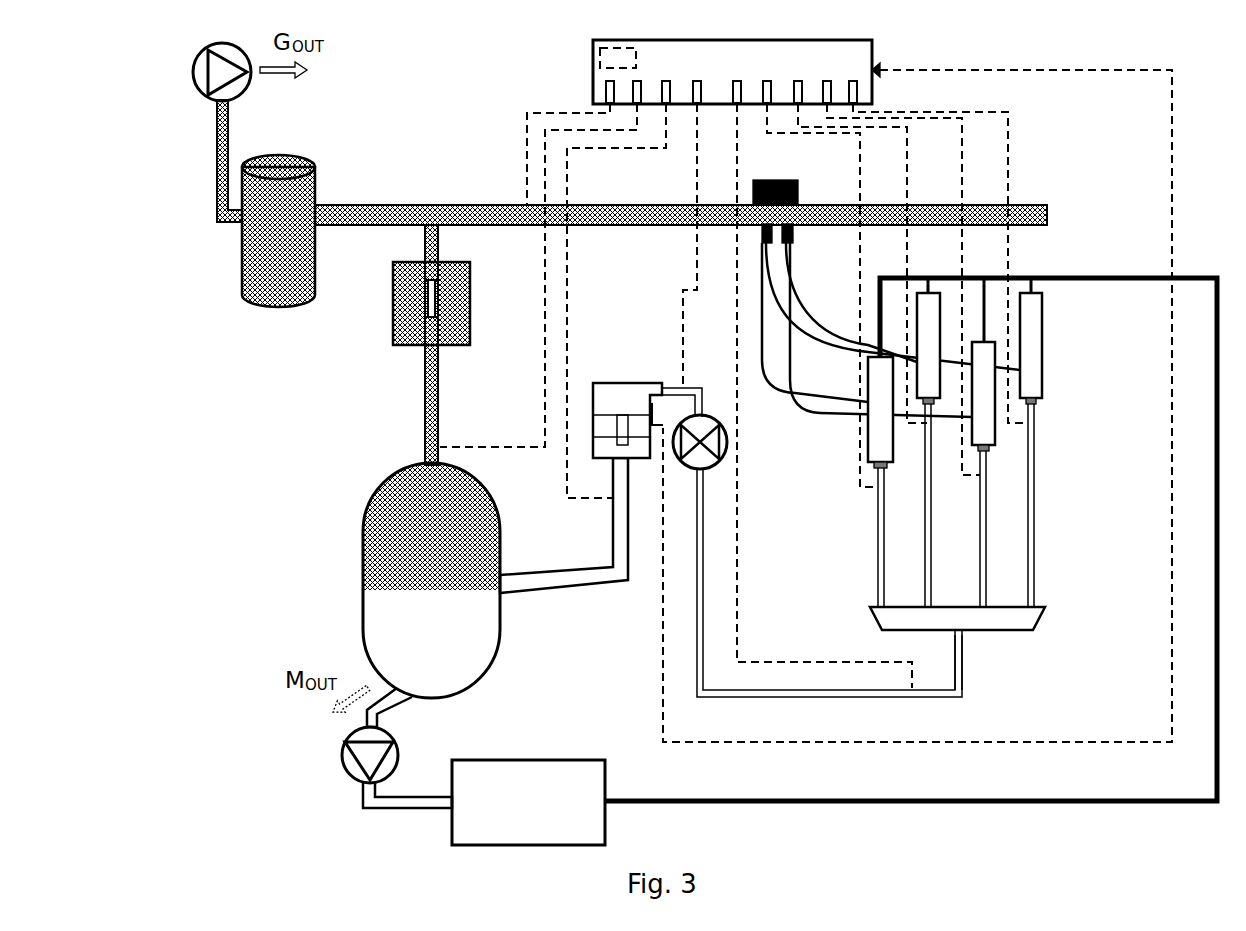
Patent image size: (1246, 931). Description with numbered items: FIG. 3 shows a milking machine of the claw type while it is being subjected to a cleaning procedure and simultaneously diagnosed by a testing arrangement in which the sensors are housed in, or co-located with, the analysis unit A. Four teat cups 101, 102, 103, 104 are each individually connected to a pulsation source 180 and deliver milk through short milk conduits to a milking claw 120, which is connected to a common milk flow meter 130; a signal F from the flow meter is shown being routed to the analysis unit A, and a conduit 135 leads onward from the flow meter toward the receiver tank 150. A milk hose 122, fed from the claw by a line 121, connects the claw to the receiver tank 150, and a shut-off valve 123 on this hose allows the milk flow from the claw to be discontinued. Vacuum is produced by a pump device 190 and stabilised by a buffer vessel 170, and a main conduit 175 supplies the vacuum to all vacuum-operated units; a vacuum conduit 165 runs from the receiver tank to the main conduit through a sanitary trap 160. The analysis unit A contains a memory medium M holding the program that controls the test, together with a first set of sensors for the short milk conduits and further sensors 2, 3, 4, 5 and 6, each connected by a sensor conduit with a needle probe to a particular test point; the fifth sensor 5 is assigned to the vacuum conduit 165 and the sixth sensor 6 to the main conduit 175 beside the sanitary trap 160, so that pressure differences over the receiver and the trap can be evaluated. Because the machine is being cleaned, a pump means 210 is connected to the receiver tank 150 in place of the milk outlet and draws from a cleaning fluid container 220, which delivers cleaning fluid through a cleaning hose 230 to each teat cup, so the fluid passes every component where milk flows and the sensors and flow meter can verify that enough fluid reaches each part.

The analysis unit A is at (593, 78).
The computer readable medium M is at (600, 52).
The flow sensor signal F is at (912, 396).
The sixth sensor 6 is at (603, 96).
The fifth sensor 5 is at (638, 81).
The fourth sensor 4 is at (668, 81).
The third sensor 3 is at (698, 81).
The second sensor 2 is at (740, 82).
The teat cup 101 is at (870, 357).
The teat cup 102 is at (925, 290).
The teat cup 103 is at (985, 343).
The teat cup 104 is at (1043, 340).
The milking claw 120 is at (1040, 620).
The supply pipe 121 is at (962, 668).
The milk hose 122 is at (720, 697).
The shut-off valve 123 is at (723, 455).
The milk flow meter 130 is at (640, 383).
The pipe 135 is at (553, 592).
The receiver tank 150 is at (362, 550).
The sanitary trap 160 is at (470, 297).
The vacuum conduit 165 is at (425, 390).
The buffer vessel 170 is at (257, 308).
The main conduit 175 is at (478, 202).
The pulsation source 180 is at (793, 178).
The pump device 190 is at (193, 77).
The pump means 210 is at (340, 758).
The cleaning fluid container 220 is at (528, 758).
The cleaning hose 230 is at (840, 800).